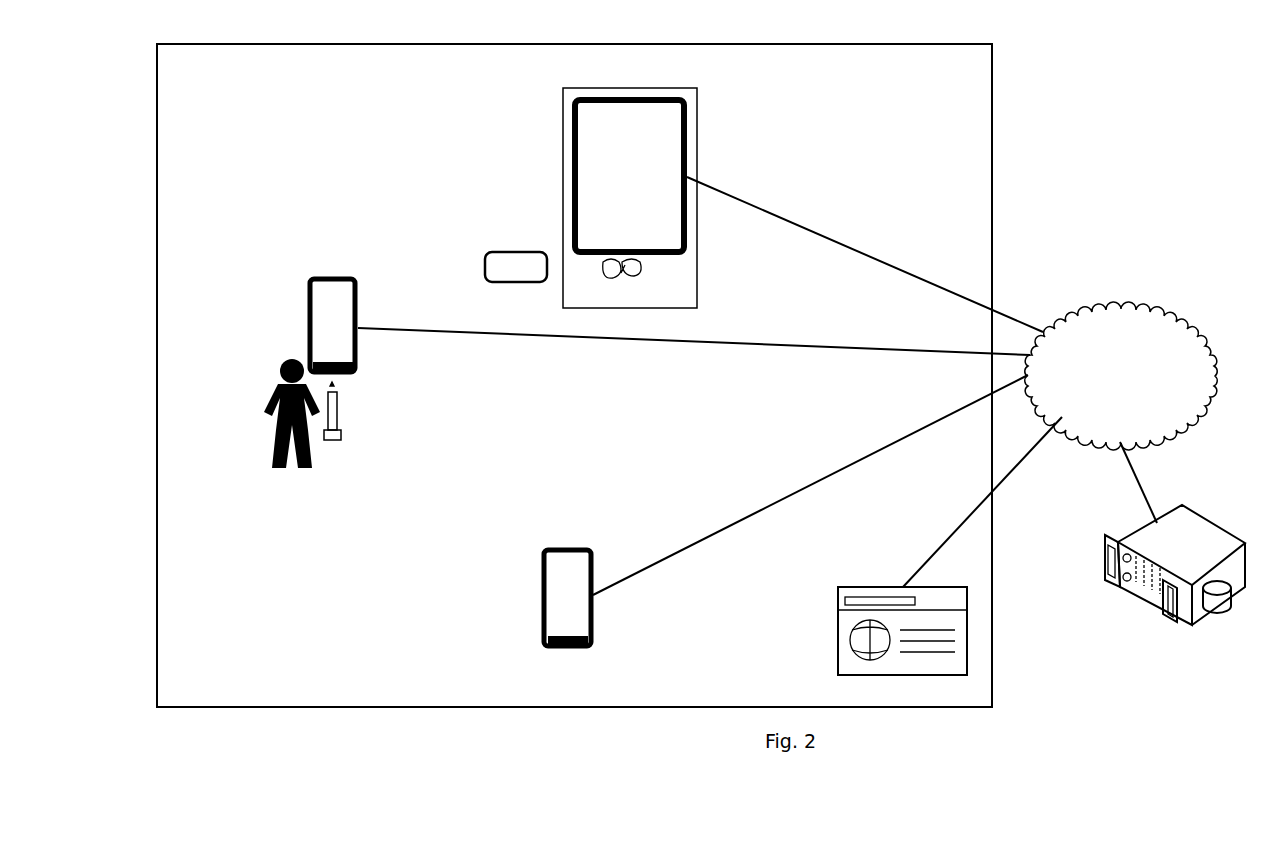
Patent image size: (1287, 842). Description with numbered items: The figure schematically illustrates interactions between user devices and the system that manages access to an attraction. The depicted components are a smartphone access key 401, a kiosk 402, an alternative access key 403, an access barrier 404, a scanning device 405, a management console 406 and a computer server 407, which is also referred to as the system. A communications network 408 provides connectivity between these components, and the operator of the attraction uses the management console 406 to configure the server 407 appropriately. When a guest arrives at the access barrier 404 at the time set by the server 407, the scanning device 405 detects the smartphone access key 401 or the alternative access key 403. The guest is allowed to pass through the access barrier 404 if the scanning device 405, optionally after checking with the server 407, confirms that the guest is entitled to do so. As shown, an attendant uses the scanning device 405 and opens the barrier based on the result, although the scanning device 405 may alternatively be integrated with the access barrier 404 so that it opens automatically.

The smartphone access key 401 is at (575, 648).
The kiosk 402 is at (697, 268).
The alternative access key 403 is at (512, 252).
The access barrier 404 is at (327, 440).
The scanning device 405 is at (338, 273).
The management console 406 is at (838, 622).
The server 407 is at (1142, 597).
The communications network 408 is at (1122, 308).